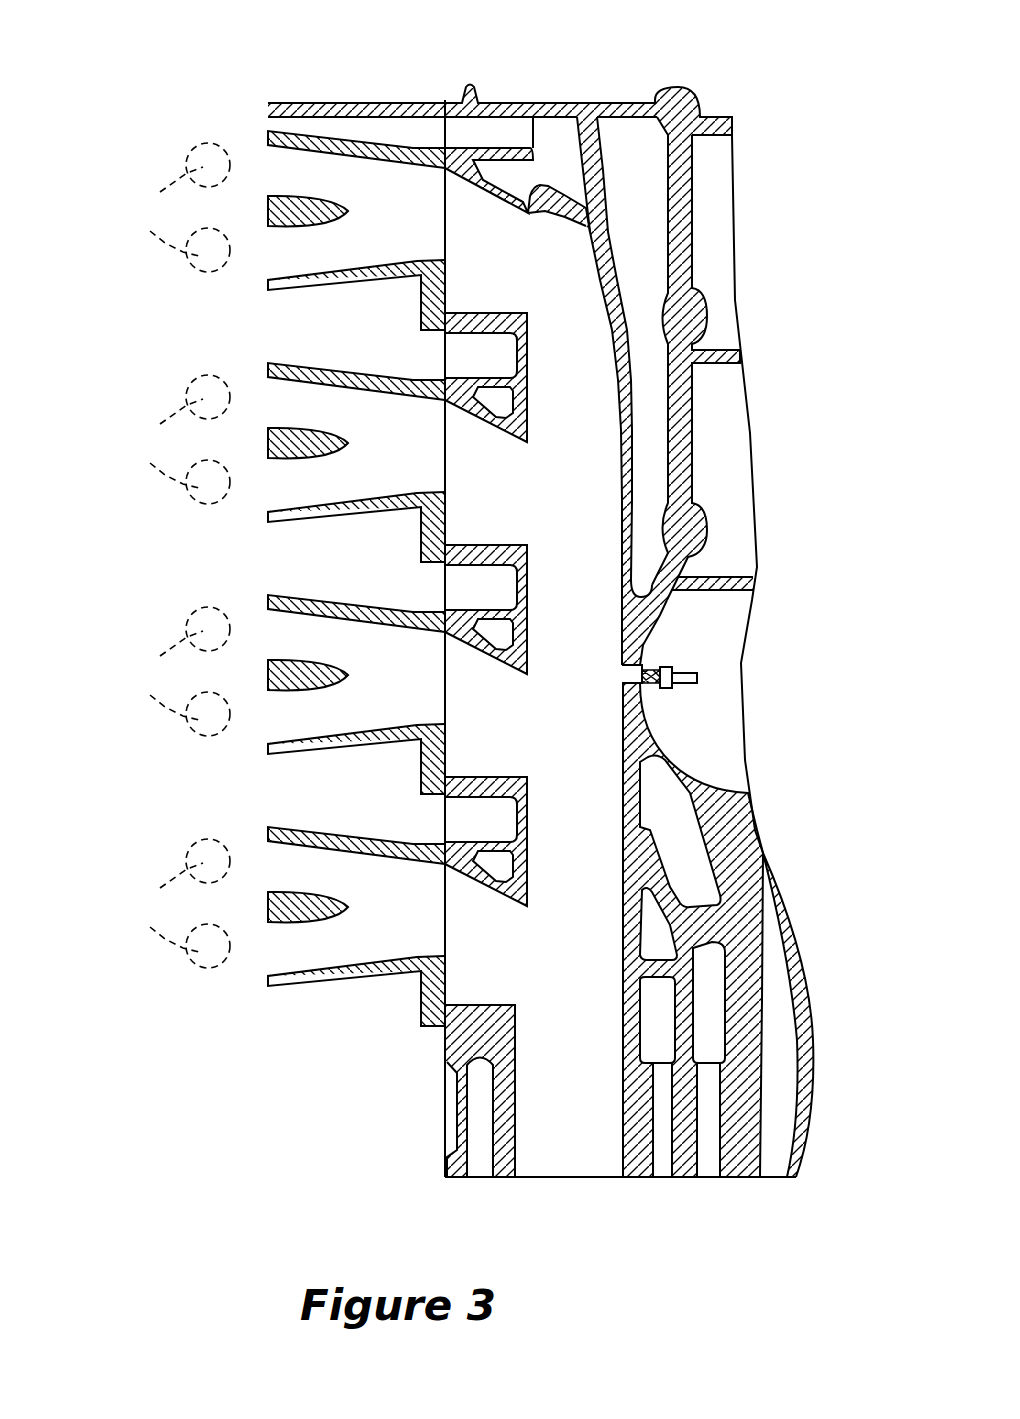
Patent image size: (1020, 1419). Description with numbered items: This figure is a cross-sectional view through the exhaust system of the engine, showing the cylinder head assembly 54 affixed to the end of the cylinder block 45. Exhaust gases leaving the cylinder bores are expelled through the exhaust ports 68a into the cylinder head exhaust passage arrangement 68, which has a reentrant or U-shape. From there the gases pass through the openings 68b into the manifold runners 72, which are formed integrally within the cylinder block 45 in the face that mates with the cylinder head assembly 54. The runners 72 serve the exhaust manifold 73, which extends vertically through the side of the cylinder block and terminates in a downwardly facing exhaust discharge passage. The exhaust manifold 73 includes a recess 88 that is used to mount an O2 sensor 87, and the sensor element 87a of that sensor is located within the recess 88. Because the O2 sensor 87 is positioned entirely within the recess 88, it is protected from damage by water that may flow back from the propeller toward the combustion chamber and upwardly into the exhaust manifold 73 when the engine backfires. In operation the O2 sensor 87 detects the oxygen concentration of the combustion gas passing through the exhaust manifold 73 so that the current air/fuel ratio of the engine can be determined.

The cylinder head assembly 54 is at (372, 103).
The cylinder block 45 is at (627, 103).
The cylinder head exhaust passage arrangement 68 is at (320, 257).
The exhaust ports 68a is at (150, 231).
The openings 68b is at (433, 237).
The manifold runners 72 is at (493, 250).
The exhaust manifold 73 is at (600, 487).
The O2 sensor 87 is at (690, 670).
The sensor element 87a is at (658, 658).
The recess 88 is at (630, 677).